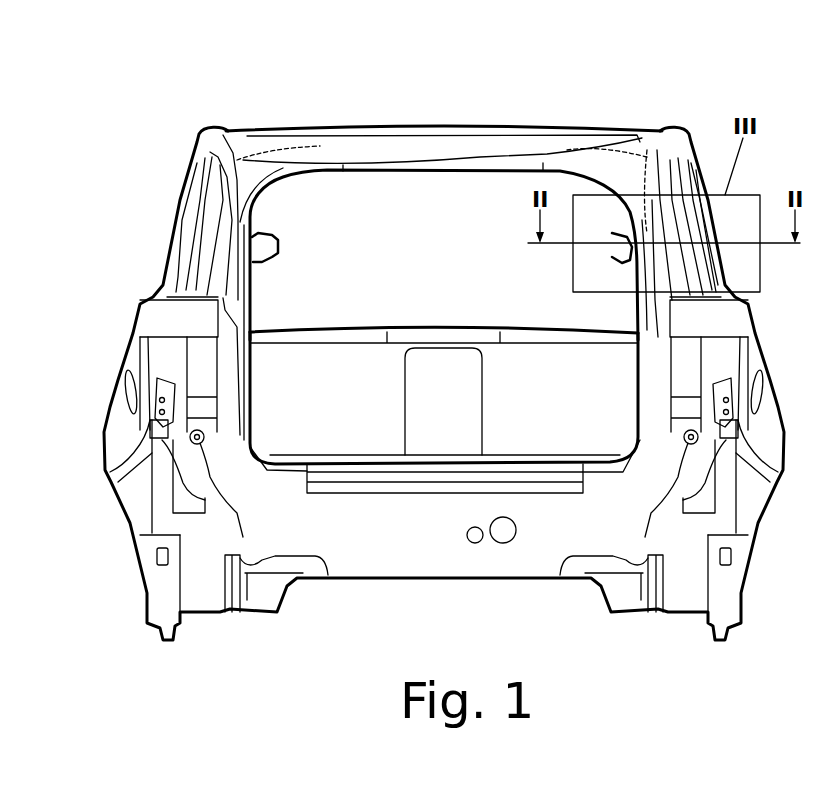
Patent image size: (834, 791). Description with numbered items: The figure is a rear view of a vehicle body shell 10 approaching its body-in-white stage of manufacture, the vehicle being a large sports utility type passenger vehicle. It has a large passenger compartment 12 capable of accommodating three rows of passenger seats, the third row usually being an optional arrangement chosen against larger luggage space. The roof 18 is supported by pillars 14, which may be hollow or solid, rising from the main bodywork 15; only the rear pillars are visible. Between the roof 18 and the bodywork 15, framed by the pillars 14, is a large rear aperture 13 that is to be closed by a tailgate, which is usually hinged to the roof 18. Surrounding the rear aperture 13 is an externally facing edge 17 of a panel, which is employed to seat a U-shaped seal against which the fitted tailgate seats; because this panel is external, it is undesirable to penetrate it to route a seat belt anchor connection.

The vehicle body shell 10 is at (541, 95).
The passenger compartment 12 is at (352, 200).
The rear aperture 13 is at (253, 307).
The pillars 14 is at (218, 205).
The main bodywork 15 is at (445, 538).
The externally facing edge 17 is at (633, 307).
The roof 18 is at (465, 148).